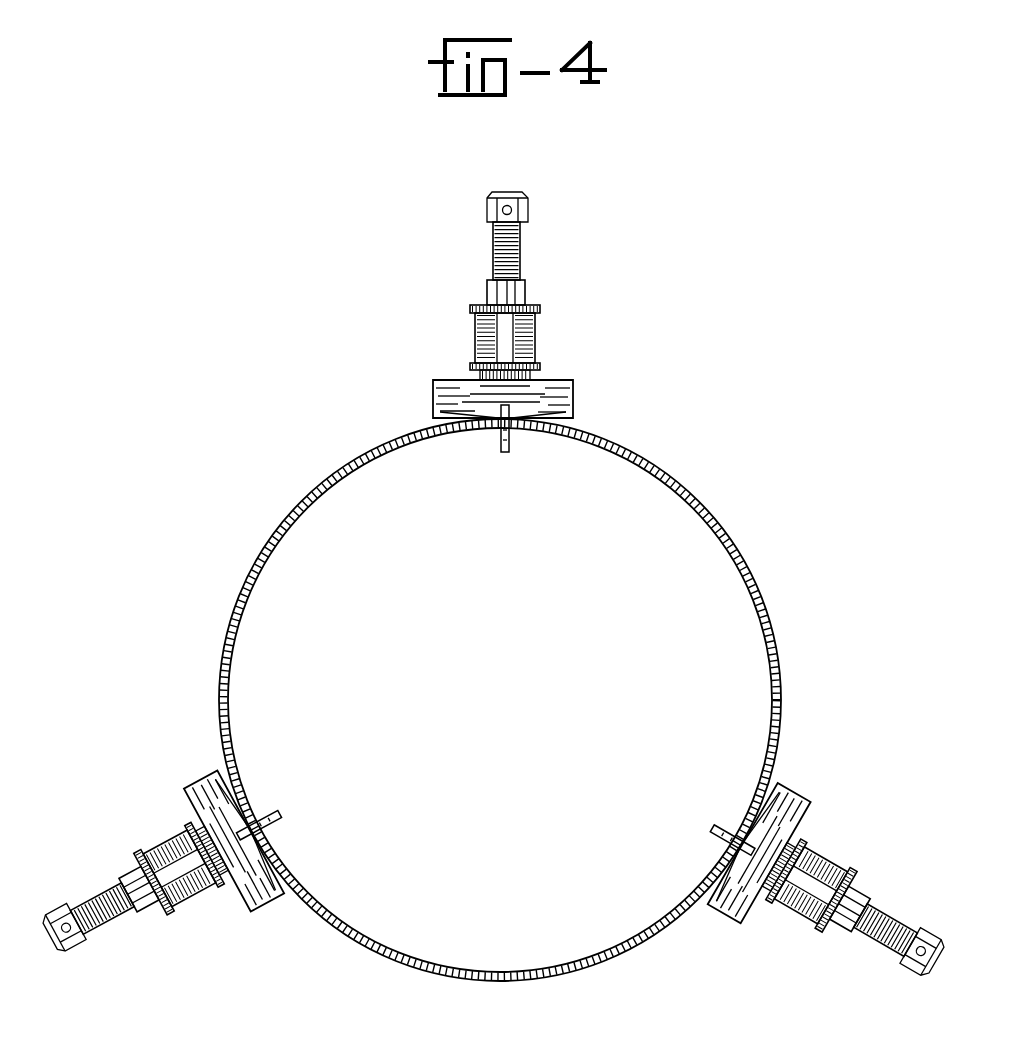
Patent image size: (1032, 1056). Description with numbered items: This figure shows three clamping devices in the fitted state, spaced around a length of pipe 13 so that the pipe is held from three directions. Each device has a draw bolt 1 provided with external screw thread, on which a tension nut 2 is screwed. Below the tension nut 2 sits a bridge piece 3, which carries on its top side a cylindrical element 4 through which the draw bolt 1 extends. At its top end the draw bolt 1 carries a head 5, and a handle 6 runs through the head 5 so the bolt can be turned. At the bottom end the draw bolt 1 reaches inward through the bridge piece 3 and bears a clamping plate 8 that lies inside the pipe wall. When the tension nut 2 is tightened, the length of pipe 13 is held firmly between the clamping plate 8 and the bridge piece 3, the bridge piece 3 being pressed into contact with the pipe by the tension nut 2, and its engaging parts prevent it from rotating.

The draw bolt 1 is at (521, 262).
The tension nut 2 is at (526, 296).
The bridge piece 3 is at (568, 385).
The cylindrical element 4 is at (536, 342).
The head 5 is at (528, 205).
The handle 6 is at (487, 208).
The clamping plate 8 is at (500, 447).
The length of pipe 13 is at (676, 478).